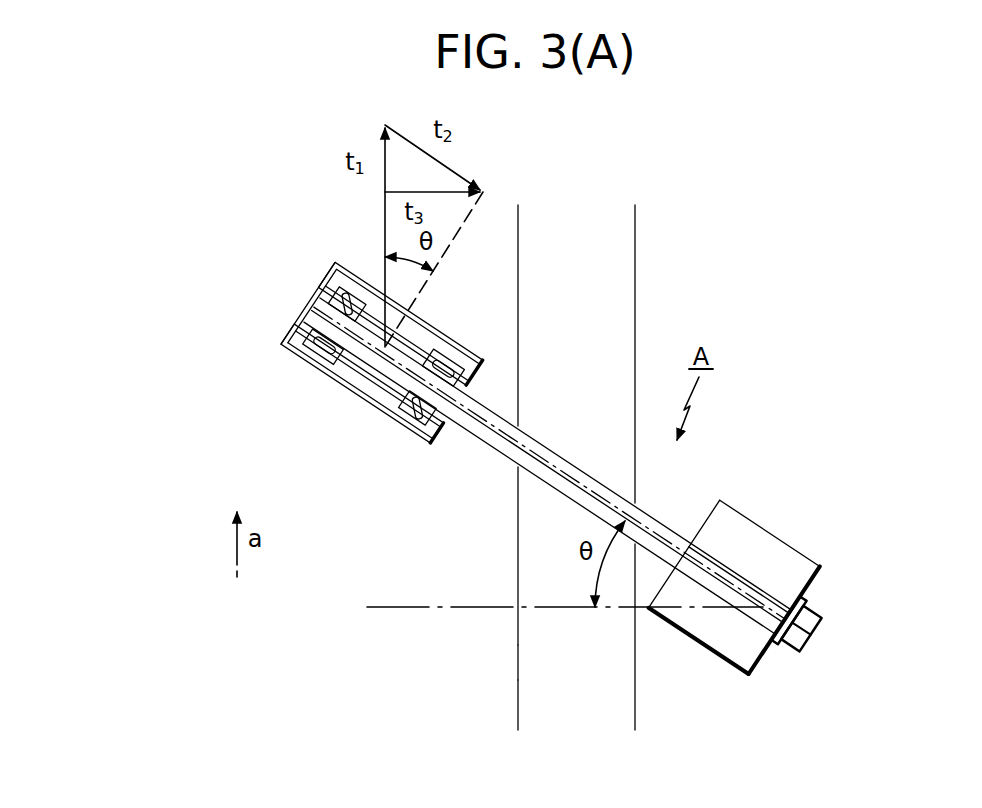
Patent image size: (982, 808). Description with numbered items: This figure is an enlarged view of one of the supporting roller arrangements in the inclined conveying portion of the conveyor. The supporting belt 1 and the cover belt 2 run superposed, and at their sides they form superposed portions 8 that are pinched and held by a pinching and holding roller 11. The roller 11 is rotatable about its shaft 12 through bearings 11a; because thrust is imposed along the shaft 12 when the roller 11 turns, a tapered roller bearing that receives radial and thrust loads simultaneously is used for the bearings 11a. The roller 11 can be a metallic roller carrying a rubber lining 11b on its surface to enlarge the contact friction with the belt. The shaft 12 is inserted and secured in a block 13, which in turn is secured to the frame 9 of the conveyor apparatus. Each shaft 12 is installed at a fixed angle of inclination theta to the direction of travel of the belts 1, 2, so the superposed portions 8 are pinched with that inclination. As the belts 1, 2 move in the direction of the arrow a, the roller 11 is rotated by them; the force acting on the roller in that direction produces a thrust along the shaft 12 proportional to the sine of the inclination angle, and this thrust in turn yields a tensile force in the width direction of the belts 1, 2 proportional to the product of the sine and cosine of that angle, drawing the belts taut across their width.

The supporting belt 1 is at (500, 699).
The cover belt 2 is at (467, 659).
The superposed portions 8 is at (524, 270).
The frame 9 is at (640, 410).
The pinching and holding roller 11 is at (337, 270).
The bearings 11a is at (315, 332).
The rubber lining 11b is at (420, 318).
The shaft 12 is at (475, 436).
The block 13 is at (790, 556).